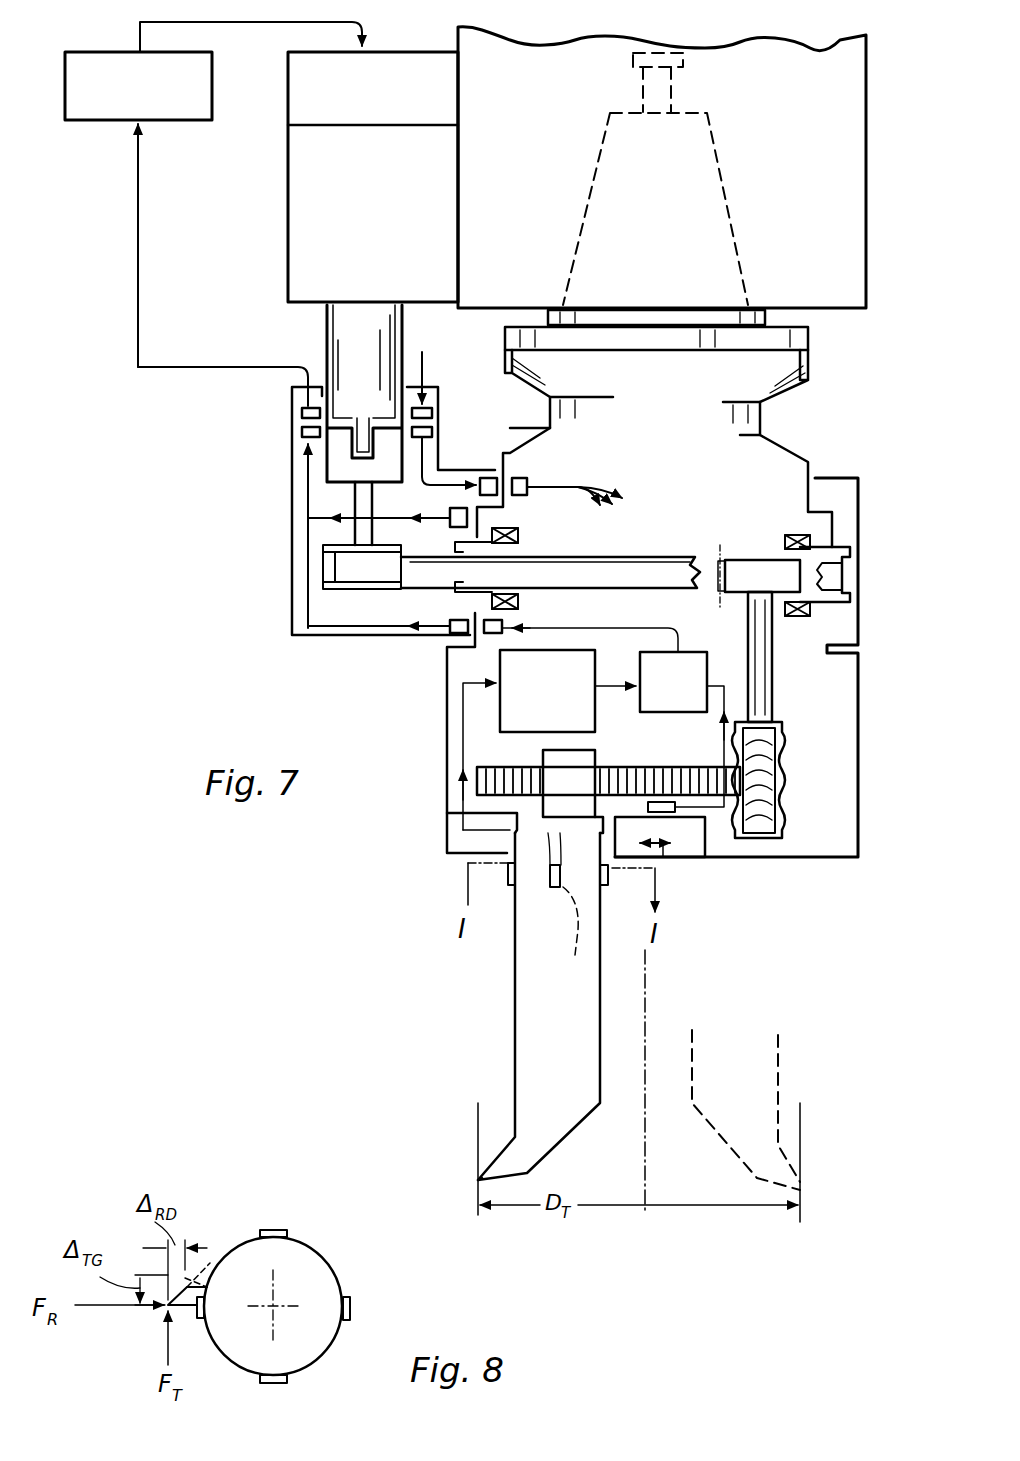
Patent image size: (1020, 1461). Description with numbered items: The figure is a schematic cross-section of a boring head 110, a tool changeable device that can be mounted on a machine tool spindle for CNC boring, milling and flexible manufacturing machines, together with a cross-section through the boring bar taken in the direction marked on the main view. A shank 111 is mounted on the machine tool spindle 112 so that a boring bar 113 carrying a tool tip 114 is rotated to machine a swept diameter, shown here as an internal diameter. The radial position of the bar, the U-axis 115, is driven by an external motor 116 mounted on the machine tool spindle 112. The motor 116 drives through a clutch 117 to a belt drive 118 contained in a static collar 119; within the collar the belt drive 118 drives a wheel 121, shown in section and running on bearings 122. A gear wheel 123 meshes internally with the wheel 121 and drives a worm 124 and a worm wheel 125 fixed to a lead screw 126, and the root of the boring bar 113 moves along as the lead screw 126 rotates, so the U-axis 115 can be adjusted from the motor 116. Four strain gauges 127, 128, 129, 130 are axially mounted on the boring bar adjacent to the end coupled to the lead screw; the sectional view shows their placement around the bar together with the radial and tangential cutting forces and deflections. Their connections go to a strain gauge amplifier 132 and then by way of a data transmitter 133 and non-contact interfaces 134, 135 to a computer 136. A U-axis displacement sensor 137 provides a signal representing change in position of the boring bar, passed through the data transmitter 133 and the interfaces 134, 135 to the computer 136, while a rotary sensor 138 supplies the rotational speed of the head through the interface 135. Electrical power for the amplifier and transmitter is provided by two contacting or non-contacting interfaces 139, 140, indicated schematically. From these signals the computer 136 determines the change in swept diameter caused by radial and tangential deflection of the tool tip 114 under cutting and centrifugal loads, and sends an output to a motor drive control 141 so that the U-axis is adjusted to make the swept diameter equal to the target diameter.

In FIG. 7, the boring head 110 is at (890, 575).
In FIG. 7, the shank 111 is at (725, 246).
In FIG. 7, the machine tool spindle 112 is at (805, 88).
In FIG. 7, the boring bar 113 is at (530, 1007).
In FIG. 7, the tool tip 114 is at (478, 1182).
In FIG. 7, the U-axis 115 is at (665, 860).
In FIG. 7, the external motor 116 is at (310, 243).
In FIG. 7, the clutch 117 is at (345, 463).
In FIG. 7, the belt drive 118 is at (425, 572).
In FIG. 7, the static collar 119 is at (855, 518).
In FIG. 7, the wheel 121 is at (833, 548).
In FIG. 7, the bearings 122 is at (525, 547).
In FIG. 7, the gear wheel 123 is at (760, 560).
In FIG. 7, the worm 124 is at (772, 725).
In FIG. 7, the worm wheel 125 is at (782, 778).
In FIG. 7, the lead screw 126 is at (622, 767).
In FIG. 7, the strain gauge 127 is at (550, 886).
In FIG. 8, the strain gauge 127 is at (287, 1382).
In FIG. 7, the strain gauge 128 is at (507, 870).
In FIG. 8, the strain gauge 128 is at (198, 1320).
In FIG. 7, the strain gauge 129 is at (561, 934).
In FIG. 8, the strain gauge 129 is at (277, 1230).
In FIG. 7, the strain gauge 130 is at (608, 880).
In FIG. 8, the strain gauge 130 is at (350, 1302).
In FIG. 7, the strain gauge amplifier 132 is at (560, 650).
In FIG. 7, the data transmitter 133 is at (688, 652).
In FIG. 7, the non-contact interface 134 is at (450, 634).
In FIG. 7, the non-contact interface 135 is at (297, 412).
In FIG. 7, the computer 136 is at (103, 121).
In FIG. 7, the U-axis displacement sensor 137 is at (681, 800).
In FIG. 7, the rotary sensor 138 is at (457, 506).
In FIG. 7, the interface 139 is at (446, 420).
In FIG. 7, the interface 140 is at (522, 477).
In FIG. 7, the motor drive control 141 is at (413, 72).